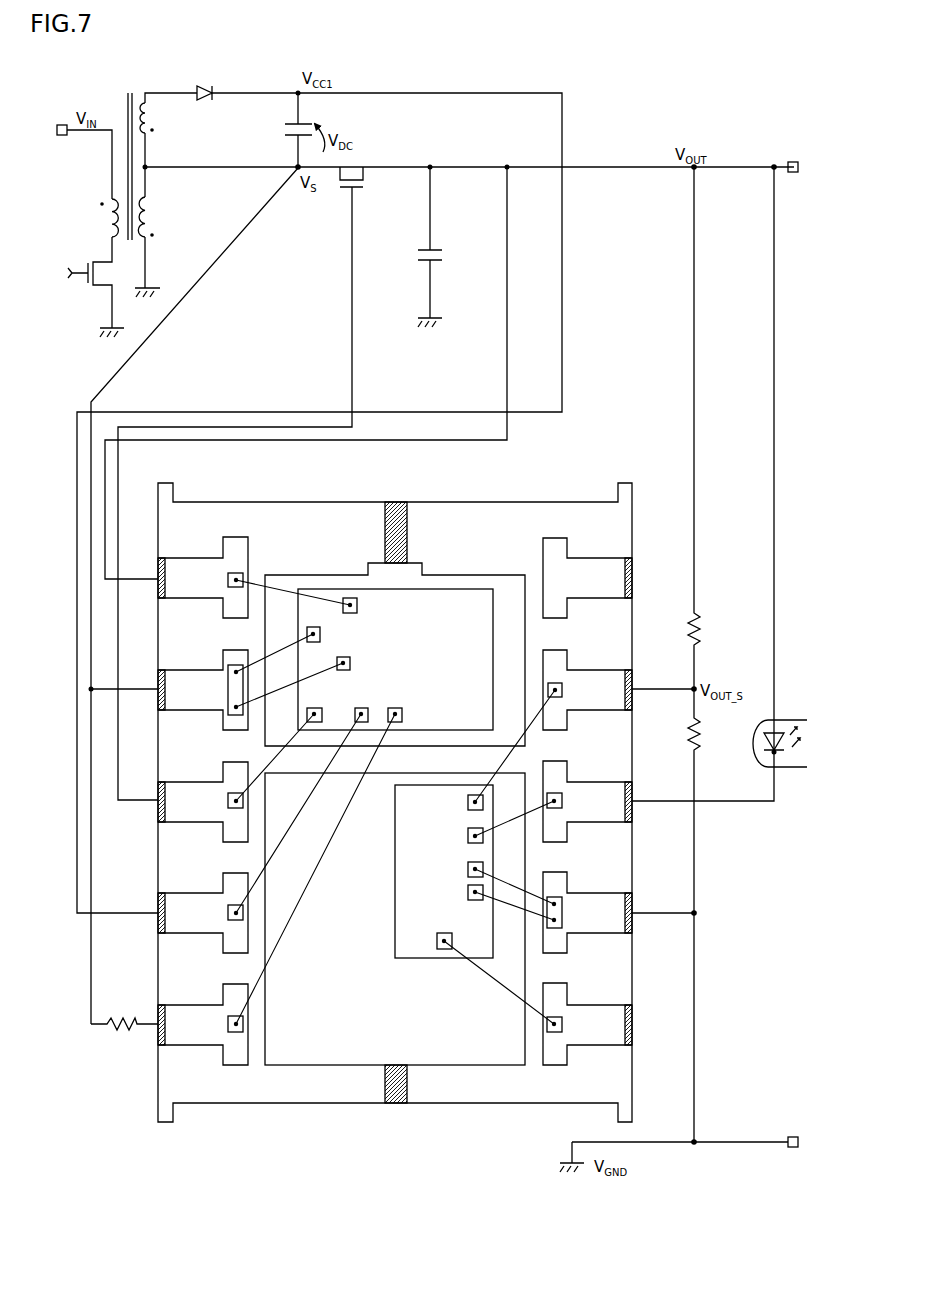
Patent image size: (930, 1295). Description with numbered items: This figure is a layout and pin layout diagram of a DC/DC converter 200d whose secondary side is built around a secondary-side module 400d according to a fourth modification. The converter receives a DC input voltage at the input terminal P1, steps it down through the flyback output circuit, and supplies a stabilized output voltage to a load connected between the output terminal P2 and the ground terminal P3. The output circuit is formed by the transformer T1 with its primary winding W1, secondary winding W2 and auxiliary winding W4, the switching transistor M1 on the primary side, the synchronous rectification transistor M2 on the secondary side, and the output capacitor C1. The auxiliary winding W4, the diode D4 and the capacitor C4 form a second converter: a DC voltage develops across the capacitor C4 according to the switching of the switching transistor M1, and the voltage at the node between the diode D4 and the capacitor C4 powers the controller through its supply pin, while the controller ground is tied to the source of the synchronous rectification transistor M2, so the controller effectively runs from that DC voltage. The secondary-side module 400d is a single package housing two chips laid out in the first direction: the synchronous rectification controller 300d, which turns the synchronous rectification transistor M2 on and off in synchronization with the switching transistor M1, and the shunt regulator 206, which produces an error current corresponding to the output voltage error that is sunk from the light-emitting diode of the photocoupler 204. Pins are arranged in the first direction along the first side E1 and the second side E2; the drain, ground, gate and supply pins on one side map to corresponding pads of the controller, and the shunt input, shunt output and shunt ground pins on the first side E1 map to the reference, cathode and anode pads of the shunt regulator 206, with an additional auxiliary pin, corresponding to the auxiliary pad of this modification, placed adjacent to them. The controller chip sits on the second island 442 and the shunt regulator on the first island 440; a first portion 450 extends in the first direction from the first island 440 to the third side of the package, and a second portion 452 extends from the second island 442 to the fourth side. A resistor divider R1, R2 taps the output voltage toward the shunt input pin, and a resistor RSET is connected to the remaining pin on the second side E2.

The DC/DC converter 200d is at (462, 1207).
The secondary-side module 400d is at (538, 481).
The synchronous rectification controller 300d is at (497, 605).
The second island 442 is at (337, 574).
The first island 440 is at (267, 1063).
The second portion 452 is at (383, 537).
The first portion 450 is at (388, 1075).
The shunt regulator 206 is at (423, 960).
The photocoupler 204 is at (792, 776).
The input terminal P1 is at (62, 124).
The output terminal P2 is at (790, 161).
The ground terminal P3 is at (792, 1150).
The transformer T1 is at (131, 253).
The primary winding W1 is at (100, 219).
The secondary winding W2 is at (155, 214).
The auxiliary winding W4 is at (155, 124).
The switching transistor M1 is at (89, 307).
The synchronous rectification transistor M2 is at (368, 188).
The diode D4 is at (208, 82).
The capacitor C4 is at (312, 108).
The output capacitor C1 is at (444, 256).
The resistor R1 is at (700, 631).
The resistor R2 is at (700, 736).
The setting resistor RSET is at (118, 1036).
The first side E1 is at (634, 1092).
The second side E2 is at (156, 1092).